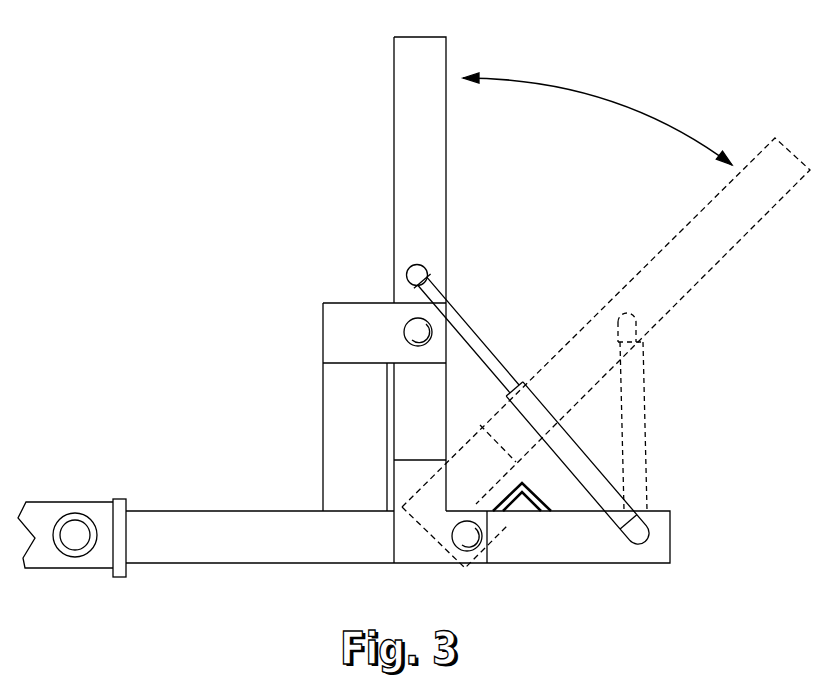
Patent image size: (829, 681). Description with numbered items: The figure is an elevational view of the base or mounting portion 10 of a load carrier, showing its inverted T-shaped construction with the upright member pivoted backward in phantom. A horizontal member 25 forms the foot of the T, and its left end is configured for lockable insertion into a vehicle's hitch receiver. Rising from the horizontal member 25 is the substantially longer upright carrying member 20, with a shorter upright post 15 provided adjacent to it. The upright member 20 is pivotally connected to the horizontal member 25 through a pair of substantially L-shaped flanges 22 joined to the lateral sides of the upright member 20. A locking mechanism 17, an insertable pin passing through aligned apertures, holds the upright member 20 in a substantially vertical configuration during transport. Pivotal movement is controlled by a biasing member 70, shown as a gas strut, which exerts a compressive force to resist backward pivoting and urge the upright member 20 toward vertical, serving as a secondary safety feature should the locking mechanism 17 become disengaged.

The base or mounting portion 10 is at (192, 241).
The shorter upright post 15 is at (341, 432).
The locking mechanism 17 is at (382, 328).
The upright carrying member 20 is at (400, 157).
The L shaped flanges 22 is at (416, 541).
The horizontal member 25 is at (263, 514).
The biasing member 70 is at (598, 462).